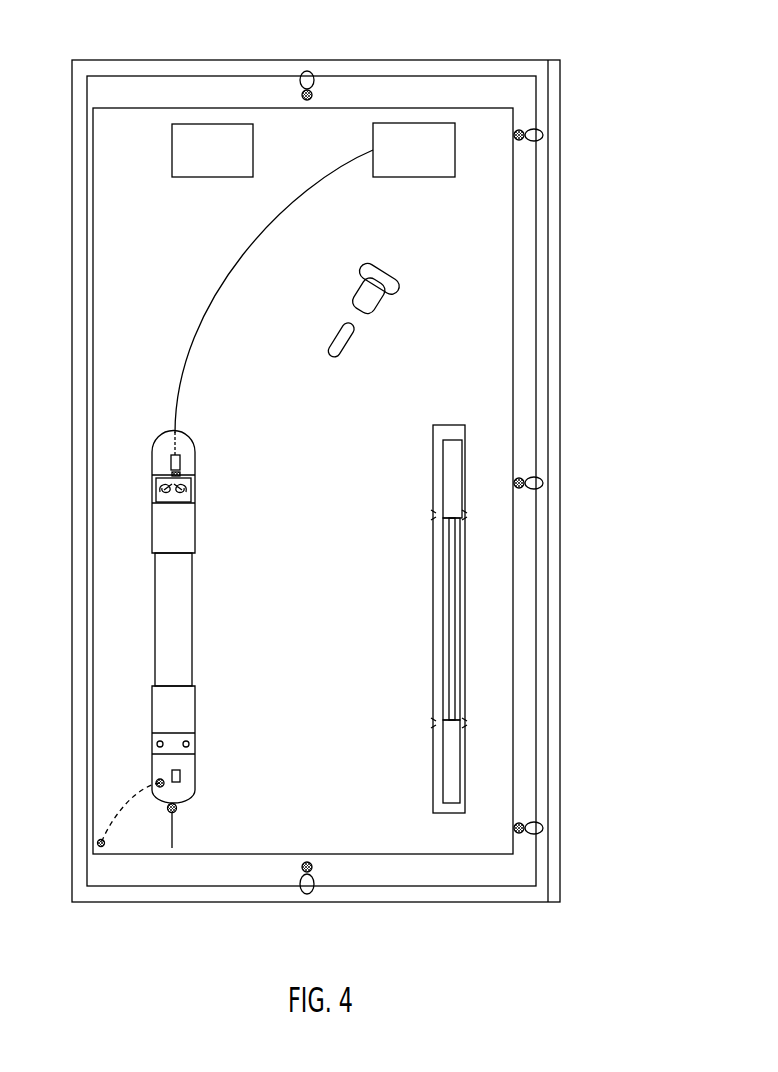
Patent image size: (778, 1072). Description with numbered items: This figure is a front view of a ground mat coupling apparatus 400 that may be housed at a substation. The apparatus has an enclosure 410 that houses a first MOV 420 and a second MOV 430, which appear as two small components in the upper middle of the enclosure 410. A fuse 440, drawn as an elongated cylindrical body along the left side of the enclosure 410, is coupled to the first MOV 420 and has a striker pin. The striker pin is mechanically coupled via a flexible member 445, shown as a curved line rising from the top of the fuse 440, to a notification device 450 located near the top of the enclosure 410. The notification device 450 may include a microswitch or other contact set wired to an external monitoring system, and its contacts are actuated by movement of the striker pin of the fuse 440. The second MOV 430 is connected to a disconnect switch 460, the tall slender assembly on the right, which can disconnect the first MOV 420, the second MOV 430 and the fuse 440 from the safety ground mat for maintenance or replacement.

The ground mat coupling apparatus 400 is at (600, 140).
The enclosure 410 is at (548, 382).
The first MOV 420 is at (393, 295).
The second MOV 430 is at (326, 358).
The fuse 440 is at (195, 602).
The cable / wire 445 is at (241, 256).
The notification device 450 is at (390, 136).
The disconnect switch 460 is at (435, 670).